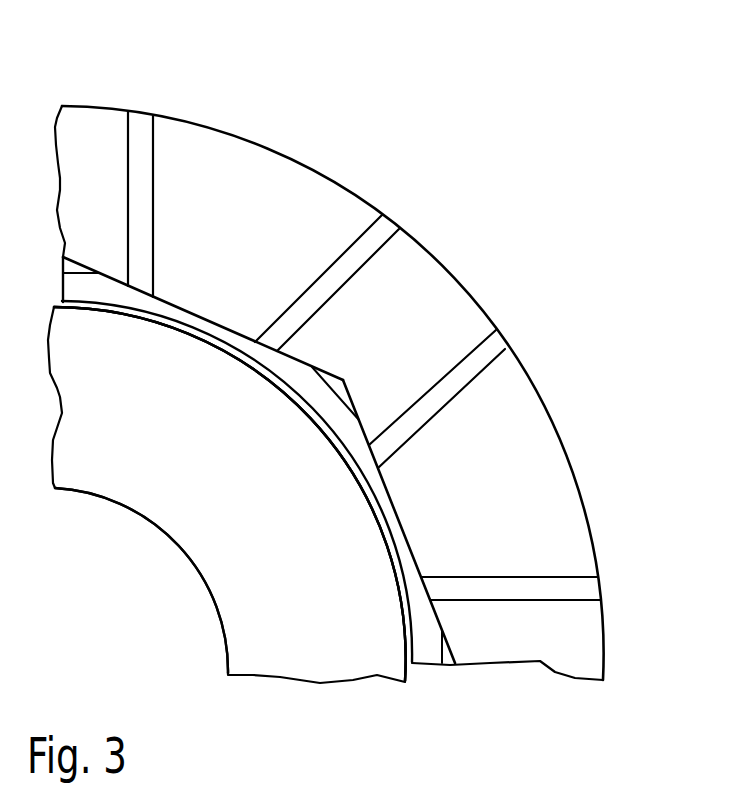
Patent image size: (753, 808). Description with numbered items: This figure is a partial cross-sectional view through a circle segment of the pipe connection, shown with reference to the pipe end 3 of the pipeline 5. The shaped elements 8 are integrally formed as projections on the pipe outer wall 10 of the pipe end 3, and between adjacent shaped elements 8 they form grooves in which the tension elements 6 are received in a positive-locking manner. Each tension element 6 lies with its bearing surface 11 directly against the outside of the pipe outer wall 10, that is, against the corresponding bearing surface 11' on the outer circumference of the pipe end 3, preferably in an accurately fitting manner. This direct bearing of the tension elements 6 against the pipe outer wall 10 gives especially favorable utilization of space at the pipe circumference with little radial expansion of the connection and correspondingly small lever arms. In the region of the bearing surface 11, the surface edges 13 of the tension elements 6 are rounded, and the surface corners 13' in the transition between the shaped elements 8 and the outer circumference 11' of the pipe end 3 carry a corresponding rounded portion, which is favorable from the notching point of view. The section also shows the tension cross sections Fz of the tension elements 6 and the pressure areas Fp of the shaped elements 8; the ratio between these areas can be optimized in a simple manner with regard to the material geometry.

The pipe end 3 is at (270, 658).
The pipeline 5 is at (178, 548).
The tension element 6 is at (223, 125).
The shaped element 8 is at (90, 132).
The pipe outer wall 10 is at (357, 657).
The bearing surface 11 is at (237, 481).
The bearing surface of the pipe wall 11' is at (230, 494).
The surface edges 13 is at (424, 317).
The surface corners 13' is at (376, 358).
The tension cross section Fz is at (253, 208).
The pressure area Fp is at (390, 297).